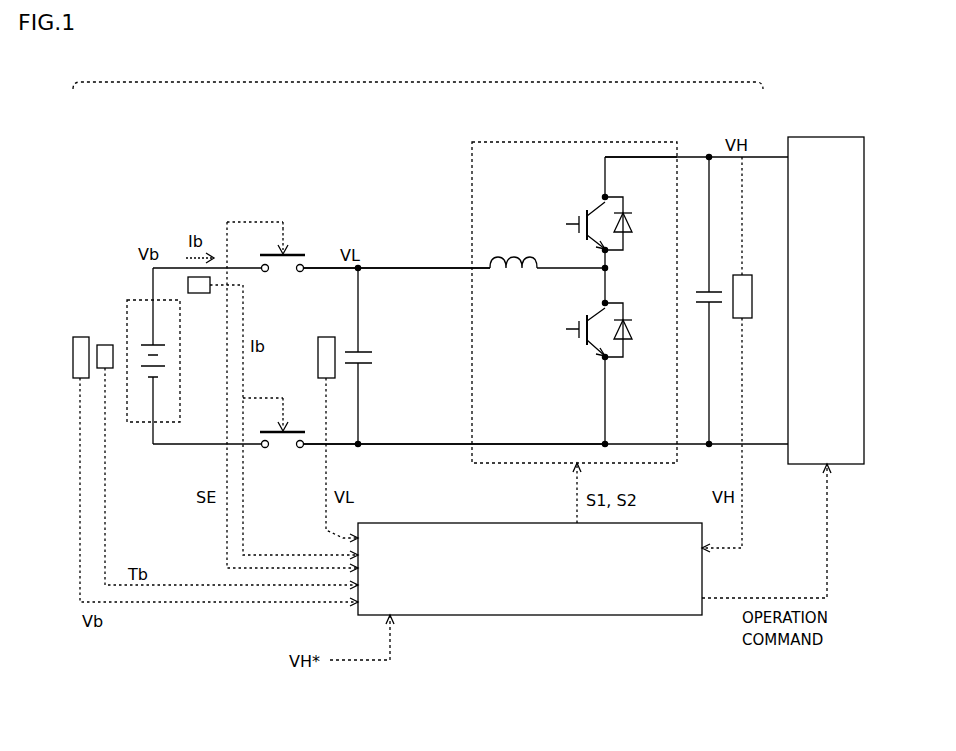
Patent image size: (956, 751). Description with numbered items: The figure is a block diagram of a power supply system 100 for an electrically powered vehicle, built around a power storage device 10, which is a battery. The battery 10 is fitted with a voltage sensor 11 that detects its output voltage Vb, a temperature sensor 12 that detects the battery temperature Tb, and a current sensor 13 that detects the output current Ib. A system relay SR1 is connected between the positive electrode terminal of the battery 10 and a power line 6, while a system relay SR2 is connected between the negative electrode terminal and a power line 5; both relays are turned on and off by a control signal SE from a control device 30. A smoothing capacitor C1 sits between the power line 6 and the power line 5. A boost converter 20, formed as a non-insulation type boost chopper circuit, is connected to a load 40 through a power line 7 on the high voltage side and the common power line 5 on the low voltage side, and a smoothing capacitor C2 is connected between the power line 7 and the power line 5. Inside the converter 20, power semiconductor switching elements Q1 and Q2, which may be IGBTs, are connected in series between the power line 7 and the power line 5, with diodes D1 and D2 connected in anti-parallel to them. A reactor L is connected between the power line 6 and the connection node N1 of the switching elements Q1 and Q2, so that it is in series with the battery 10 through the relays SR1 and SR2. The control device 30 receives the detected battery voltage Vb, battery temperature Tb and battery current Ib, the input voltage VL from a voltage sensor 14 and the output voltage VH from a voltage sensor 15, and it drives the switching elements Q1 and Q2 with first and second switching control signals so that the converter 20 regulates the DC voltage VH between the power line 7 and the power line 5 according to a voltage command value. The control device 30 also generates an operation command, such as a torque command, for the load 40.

The power supply system 100 is at (417, 82).
The power storage device 10 is at (131, 427).
The voltage sensor 11 is at (80, 337).
The temperature sensor 12 is at (105, 345).
The current sensor 13 is at (203, 294).
The voltage sensor 14 is at (326, 337).
The voltage sensor 15 is at (742, 275).
The boost converter 20 is at (470, 157).
The power line 7 is at (659, 157).
The power line 6 is at (394, 266).
The power line 5 is at (396, 446).
The control device 30 is at (667, 616).
The load 40 is at (816, 137).
The system relay SR1 is at (282, 273).
The system relay SR2 is at (282, 450).
The smoothing capacitor C1 is at (366, 356).
The smoothing capacitor C2 is at (727, 300).
The reactor L is at (513, 283).
The power semiconductor switching element Q1 is at (598, 210).
The power semiconductor switching element Q2 is at (598, 316).
The diode D1 is at (632, 226).
The diode D2 is at (632, 333).
The connection node N1 is at (612, 268).